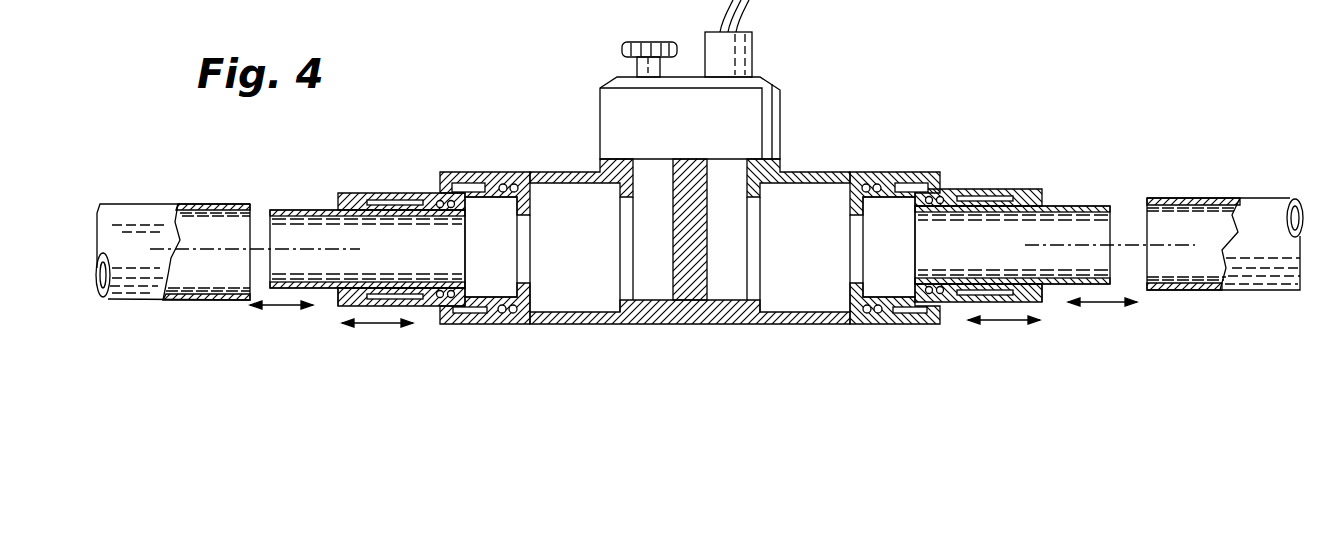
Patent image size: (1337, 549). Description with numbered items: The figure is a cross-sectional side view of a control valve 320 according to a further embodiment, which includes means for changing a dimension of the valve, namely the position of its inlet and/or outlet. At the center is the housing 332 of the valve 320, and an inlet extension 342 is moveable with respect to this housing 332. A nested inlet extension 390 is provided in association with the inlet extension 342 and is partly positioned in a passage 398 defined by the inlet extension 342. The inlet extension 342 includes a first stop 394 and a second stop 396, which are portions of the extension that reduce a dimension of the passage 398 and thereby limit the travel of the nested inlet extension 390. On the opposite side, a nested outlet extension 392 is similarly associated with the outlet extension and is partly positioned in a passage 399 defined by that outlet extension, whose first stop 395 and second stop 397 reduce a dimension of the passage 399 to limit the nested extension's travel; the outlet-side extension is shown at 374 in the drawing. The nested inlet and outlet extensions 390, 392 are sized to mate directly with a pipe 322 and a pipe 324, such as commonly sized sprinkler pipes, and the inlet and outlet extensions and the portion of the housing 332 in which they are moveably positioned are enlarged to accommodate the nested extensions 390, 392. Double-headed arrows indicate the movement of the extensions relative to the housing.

The control valve 320 is at (905, 73).
The pipe 322 is at (232, 195).
The pipe 324 is at (1172, 192).
The housing 332 is at (806, 172).
The inlet extension 342 is at (362, 185).
The second fitting sleeve 374 is at (995, 180).
The nested inlet extension 390 is at (290, 195).
The nested outlet extension 392 is at (1075, 195).
The first stop 394 is at (335, 292).
The first stop 395 is at (1047, 297).
The second stop 396 is at (530, 289).
The second stop 397 is at (853, 289).
The passage 398 is at (522, 258).
The passage 399 is at (910, 253).